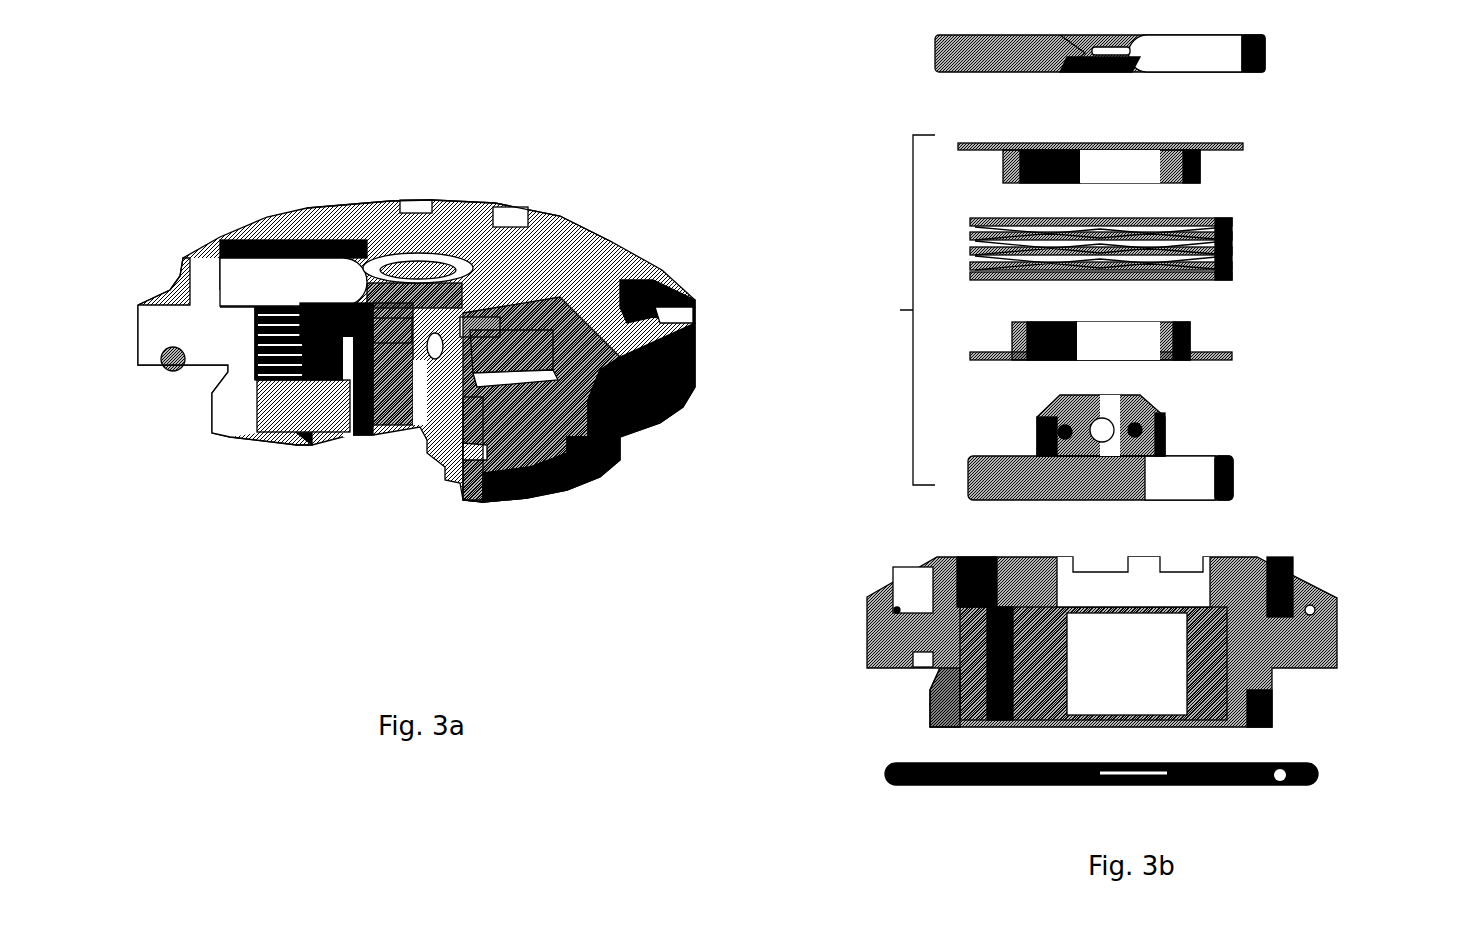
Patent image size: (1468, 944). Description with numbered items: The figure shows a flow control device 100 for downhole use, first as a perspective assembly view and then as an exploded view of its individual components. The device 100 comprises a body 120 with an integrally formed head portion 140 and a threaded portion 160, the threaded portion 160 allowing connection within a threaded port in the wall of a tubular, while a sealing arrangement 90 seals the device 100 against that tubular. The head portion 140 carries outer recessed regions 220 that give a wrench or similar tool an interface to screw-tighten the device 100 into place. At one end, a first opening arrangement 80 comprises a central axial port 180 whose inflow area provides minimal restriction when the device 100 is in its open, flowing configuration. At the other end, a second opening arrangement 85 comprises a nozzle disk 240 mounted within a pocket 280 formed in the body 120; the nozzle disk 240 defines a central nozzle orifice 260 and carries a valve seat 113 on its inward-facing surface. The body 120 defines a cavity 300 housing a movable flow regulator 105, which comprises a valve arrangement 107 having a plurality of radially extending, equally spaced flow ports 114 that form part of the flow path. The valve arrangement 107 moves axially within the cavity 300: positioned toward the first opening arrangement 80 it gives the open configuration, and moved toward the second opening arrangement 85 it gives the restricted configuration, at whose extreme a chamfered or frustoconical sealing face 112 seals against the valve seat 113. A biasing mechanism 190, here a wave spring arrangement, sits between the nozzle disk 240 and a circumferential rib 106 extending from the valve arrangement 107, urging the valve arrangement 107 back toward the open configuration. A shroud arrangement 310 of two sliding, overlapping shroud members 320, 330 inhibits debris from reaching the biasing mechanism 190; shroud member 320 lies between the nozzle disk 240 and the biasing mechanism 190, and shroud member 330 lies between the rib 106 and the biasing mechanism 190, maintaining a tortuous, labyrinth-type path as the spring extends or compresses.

In FIG. 3a, the flow control device 100 is at (262, 108).
In FIG. 3a, the second opening arrangement 85 is at (433, 160).
In FIG. 3a, the central nozzle orifice 260 is at (385, 265).
In FIG. 3a, the nozzle disk 240 is at (540, 248).
In FIG. 3a, the outer recessed regions 220 is at (665, 320).
In FIG. 3a, the shroud arrangement 310 is at (293, 330).
In FIG. 3a, the central axial port 180 is at (378, 432).
In FIG. 3a, the first opening arrangement 80 is at (372, 530).
In FIG. 3b, the valve seat 113 is at (1145, 63).
In FIG. 3b, the shroud member 320 is at (1200, 160).
In FIG. 3b, the biasing mechanism 190 is at (1232, 248).
In FIG. 3b, the shroud member 330 is at (1190, 338).
In FIG. 3b, the flow regulator 105 is at (877, 310).
In FIG. 3b, the circumferential rib 106 is at (997, 452).
In FIG. 3b, the sealing face 112 is at (1160, 408).
In FIG. 3b, the flow ports 114 is at (1140, 431).
In FIG. 3b, the valve arrangement 107 is at (1183, 470).
In FIG. 3b, the body 120 is at (852, 588).
In FIG. 3b, the pocket 280 is at (1210, 577).
In FIG. 3b, the head portion 140 is at (906, 635).
In FIG. 3b, the threaded portion 160 is at (940, 697).
In FIG. 3b, the cavity 300 is at (1133, 675).
In FIG. 3b, the sealing arrangement 90 is at (890, 773).